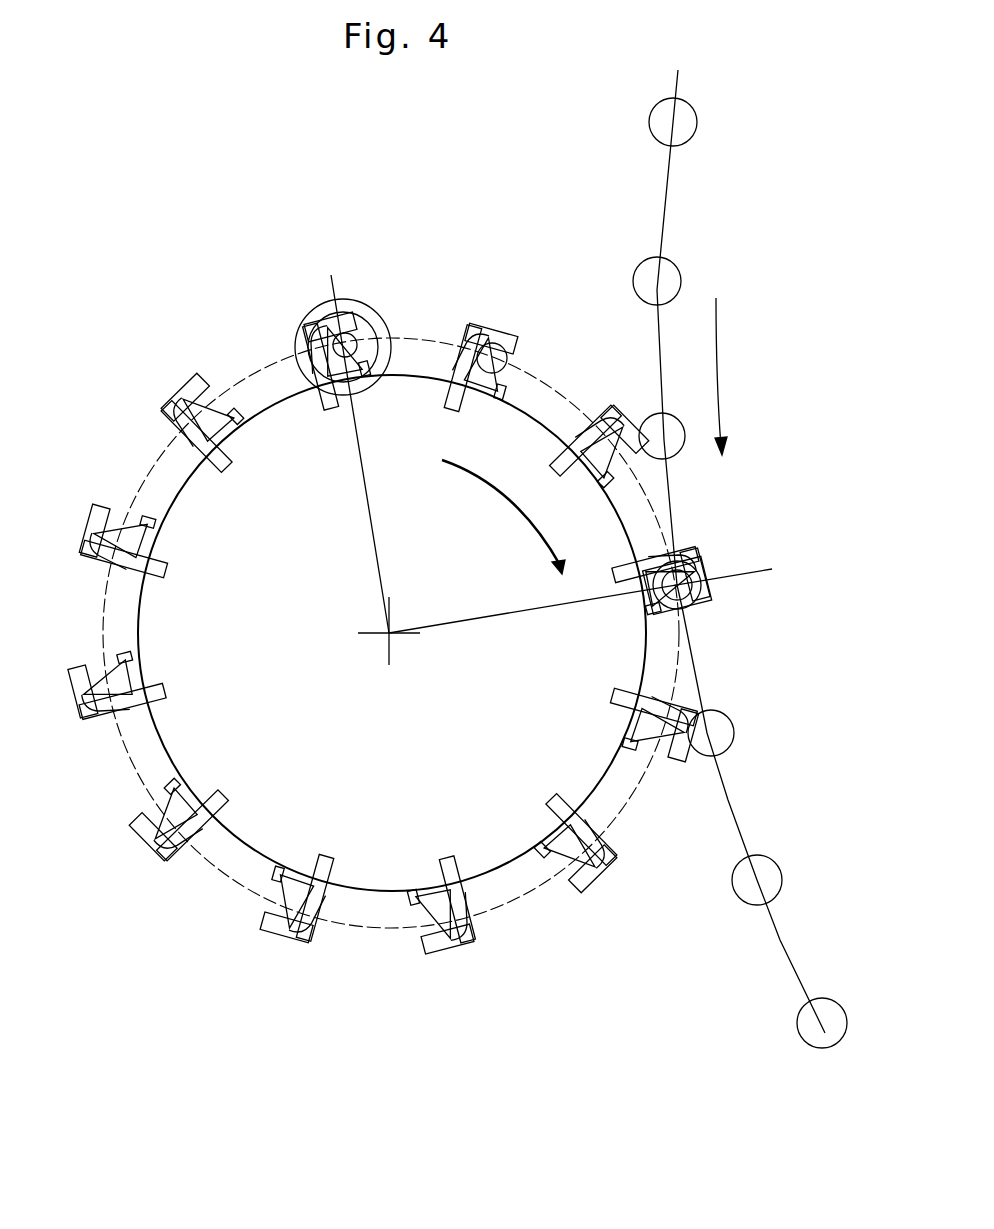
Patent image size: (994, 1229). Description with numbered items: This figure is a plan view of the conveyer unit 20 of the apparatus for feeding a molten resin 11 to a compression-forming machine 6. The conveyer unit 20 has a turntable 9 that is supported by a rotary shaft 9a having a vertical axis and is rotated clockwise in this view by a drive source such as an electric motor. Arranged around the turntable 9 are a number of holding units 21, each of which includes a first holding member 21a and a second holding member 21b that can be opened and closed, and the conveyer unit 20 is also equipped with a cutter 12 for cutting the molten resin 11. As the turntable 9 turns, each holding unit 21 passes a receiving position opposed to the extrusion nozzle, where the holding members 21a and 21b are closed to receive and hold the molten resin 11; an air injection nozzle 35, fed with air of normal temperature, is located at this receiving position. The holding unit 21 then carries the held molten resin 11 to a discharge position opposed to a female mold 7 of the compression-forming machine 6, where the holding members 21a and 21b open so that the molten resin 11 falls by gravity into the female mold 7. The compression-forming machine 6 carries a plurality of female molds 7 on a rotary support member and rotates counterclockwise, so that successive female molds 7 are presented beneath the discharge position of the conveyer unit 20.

The compression-forming machine 6 is at (655, 198).
The female mold 7 is at (670, 290).
The turntable 9 is at (242, 848).
The rotary shaft 9a is at (389, 634).
The molten resin 11 is at (352, 338).
The cutter 12 is at (96, 565).
The conveyer unit 20 is at (386, 610).
The holding unit 21 is at (355, 551).
The first holding member 21a is at (97, 508).
The second holding member 21b is at (155, 540).
The air injection nozzle 35 is at (306, 306).